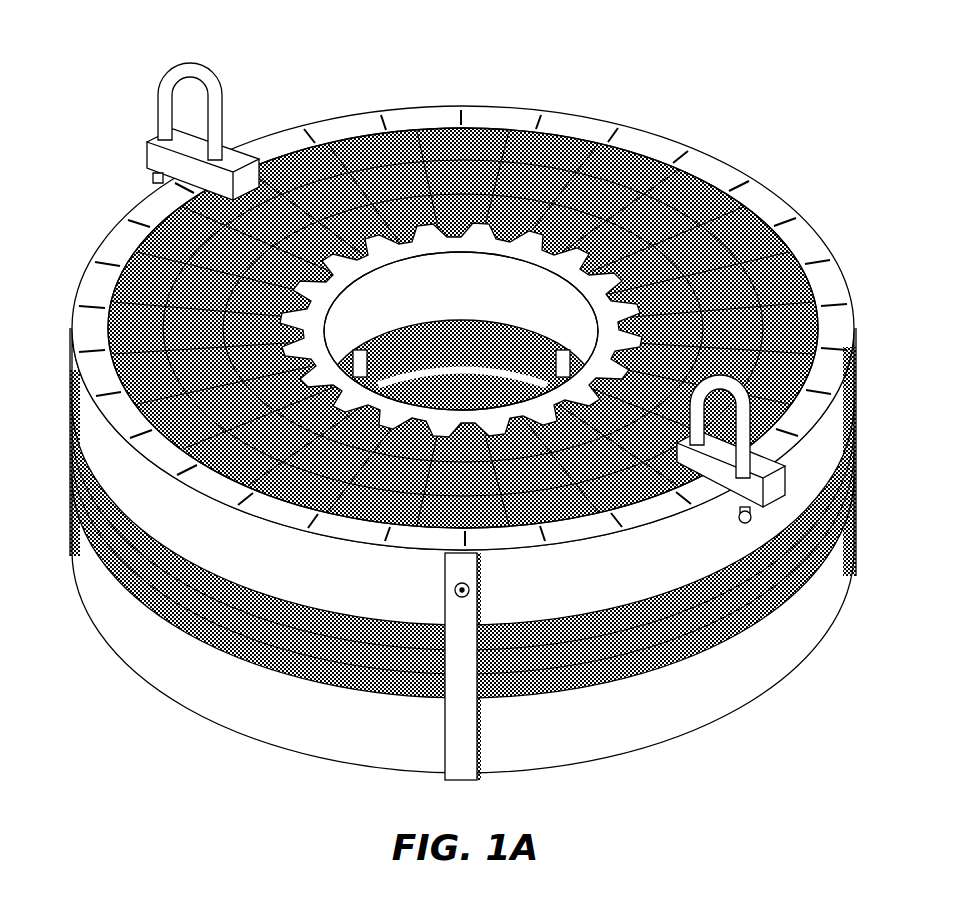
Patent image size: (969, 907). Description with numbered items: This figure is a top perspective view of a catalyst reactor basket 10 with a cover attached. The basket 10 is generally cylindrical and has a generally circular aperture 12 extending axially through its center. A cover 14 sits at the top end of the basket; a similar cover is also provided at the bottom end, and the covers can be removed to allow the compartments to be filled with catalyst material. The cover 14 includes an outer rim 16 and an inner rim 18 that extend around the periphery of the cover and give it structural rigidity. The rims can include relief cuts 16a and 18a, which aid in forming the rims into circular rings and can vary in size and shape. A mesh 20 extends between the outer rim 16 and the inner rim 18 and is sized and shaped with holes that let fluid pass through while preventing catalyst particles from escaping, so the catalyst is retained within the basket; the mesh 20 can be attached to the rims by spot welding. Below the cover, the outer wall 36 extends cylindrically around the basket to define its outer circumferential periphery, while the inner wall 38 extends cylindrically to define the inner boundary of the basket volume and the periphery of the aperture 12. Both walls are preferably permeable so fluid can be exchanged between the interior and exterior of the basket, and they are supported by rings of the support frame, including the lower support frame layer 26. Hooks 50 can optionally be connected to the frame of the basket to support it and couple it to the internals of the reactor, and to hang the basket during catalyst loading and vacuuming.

The catalyst reactor basket 10 is at (233, 70).
The circular aperture 12 is at (543, 284).
The cover 14 is at (400, 108).
The outer rim 16 is at (498, 108).
The relief cuts 16a is at (758, 200).
The inner rim 18 is at (290, 215).
The relief cuts 18a is at (508, 232).
The mesh 20 is at (167, 225).
The lower support frame layer 26 is at (762, 395).
The outer wall 36 is at (288, 670).
The inner wall 38 is at (397, 327).
The hooks 50 is at (158, 110).